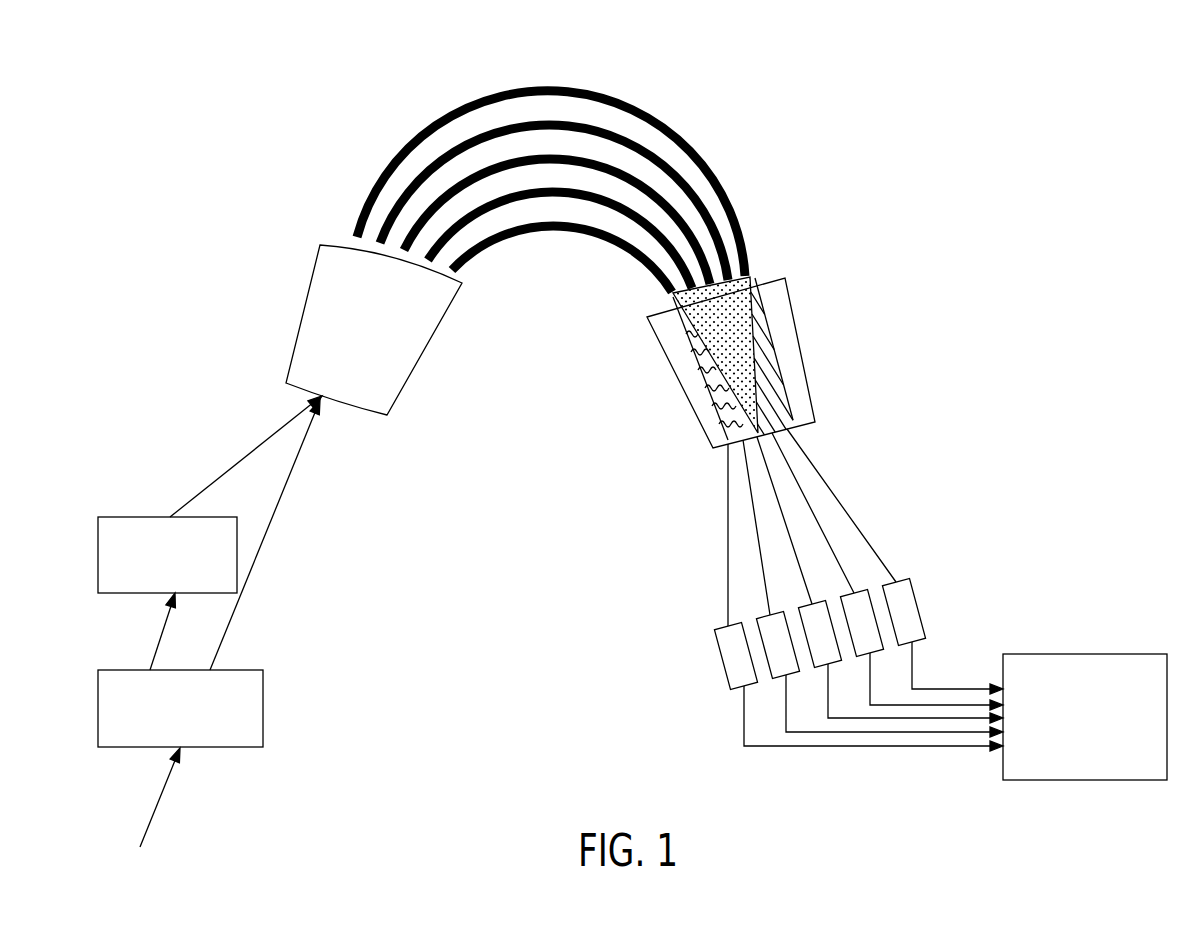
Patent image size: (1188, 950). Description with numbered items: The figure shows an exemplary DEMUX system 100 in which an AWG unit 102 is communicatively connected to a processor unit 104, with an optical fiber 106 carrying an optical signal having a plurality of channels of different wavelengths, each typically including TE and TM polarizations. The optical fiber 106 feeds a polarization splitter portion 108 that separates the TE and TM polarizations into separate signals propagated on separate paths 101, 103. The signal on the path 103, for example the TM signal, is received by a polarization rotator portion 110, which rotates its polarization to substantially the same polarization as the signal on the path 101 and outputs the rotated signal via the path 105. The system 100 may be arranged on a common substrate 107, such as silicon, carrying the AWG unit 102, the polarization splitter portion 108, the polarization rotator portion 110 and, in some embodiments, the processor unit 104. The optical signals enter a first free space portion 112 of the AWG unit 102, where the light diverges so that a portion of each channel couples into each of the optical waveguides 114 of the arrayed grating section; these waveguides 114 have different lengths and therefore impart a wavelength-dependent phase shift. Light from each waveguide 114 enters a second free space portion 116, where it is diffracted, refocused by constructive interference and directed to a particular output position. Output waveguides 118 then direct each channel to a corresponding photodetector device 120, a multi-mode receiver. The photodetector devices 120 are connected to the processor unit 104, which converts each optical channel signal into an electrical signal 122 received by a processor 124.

The DEMUX system 100 is at (1001, 120).
The path 101 is at (257, 566).
The AWG unit 102 is at (670, 92).
The path 103 is at (172, 625).
The processor unit 104 is at (1080, 540).
The path 105 is at (280, 430).
The optical fiber 106 is at (160, 795).
The common substrate 107 is at (458, 607).
The polarization splitter portion 108 is at (264, 708).
The polarization rotator portion 110 is at (131, 517).
The first free space portion 112 is at (303, 318).
The optical waveguides 114 is at (680, 131).
The second free space portion 116 is at (800, 345).
The output waveguides 118 is at (876, 548).
The photodetector device 120 is at (912, 590).
The electrical signal 122 is at (955, 689).
The processor 124 is at (1083, 654).